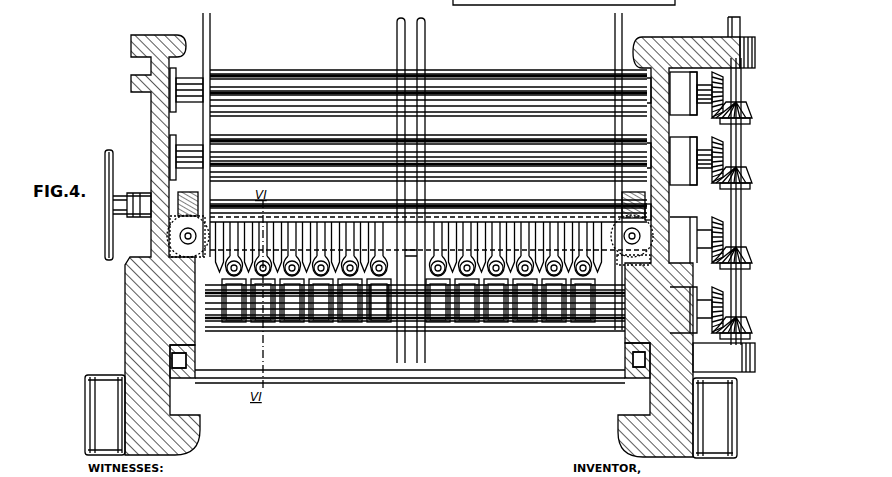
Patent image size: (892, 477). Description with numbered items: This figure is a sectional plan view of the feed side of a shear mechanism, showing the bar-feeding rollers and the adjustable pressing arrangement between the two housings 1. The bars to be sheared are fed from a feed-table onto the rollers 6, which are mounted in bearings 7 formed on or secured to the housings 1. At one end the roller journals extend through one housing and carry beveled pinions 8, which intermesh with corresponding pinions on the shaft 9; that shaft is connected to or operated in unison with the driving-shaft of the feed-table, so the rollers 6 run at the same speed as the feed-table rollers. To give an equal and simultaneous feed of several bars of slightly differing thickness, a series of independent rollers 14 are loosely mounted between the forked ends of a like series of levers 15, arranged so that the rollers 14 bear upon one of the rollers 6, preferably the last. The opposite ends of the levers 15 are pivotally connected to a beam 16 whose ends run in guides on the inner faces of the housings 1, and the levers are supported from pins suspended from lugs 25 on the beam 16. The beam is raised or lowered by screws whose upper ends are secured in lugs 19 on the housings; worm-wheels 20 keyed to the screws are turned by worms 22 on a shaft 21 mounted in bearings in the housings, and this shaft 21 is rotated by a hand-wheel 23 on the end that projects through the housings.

The housings 1 is at (126, 322).
The rollers 6 is at (478, 118).
The bearings 7 is at (189, 114).
The beveled pinions 8 is at (712, 112).
The shaft 9 is at (742, 148).
The independent rollers 14 is at (290, 330).
The levers 15 is at (386, 330).
The beam 16 is at (362, 220).
The lugs 19 is at (640, 262).
The worm-wheels 20 is at (205, 232).
The shaft 21 is at (303, 208).
The worms 22 is at (190, 194).
The hand-wheel 23 is at (113, 160).
The lugs 25 is at (500, 260).